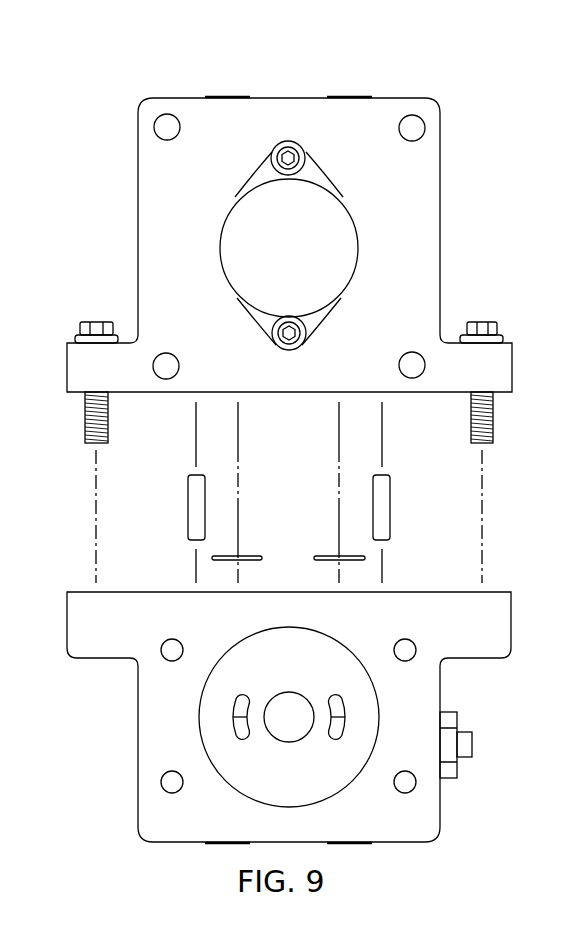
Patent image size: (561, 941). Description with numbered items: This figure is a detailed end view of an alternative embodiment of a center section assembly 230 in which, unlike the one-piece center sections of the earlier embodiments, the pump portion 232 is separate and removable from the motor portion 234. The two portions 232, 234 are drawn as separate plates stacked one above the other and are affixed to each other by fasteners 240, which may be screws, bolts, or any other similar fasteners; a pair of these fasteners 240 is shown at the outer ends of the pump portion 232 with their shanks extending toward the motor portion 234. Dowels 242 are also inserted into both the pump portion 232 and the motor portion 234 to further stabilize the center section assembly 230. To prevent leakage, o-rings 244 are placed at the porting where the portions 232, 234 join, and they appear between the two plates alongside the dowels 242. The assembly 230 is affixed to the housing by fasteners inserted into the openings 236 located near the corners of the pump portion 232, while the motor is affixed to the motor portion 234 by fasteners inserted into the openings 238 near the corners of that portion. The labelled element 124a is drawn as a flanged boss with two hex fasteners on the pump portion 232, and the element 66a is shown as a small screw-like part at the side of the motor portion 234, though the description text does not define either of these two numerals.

The center section assembly 230 is at (115, 57).
The pump portion 232 is at (138, 222).
The motor portion 234 is at (138, 700).
The openings 236 is at (154, 127).
The openings 238 is at (161, 782).
The fasteners 240 is at (95, 322).
The dowels 242 is at (188, 508).
The o-rings 244 is at (330, 556).
The flange bearing 124a is at (265, 259).
The set screw 66a is at (458, 770).